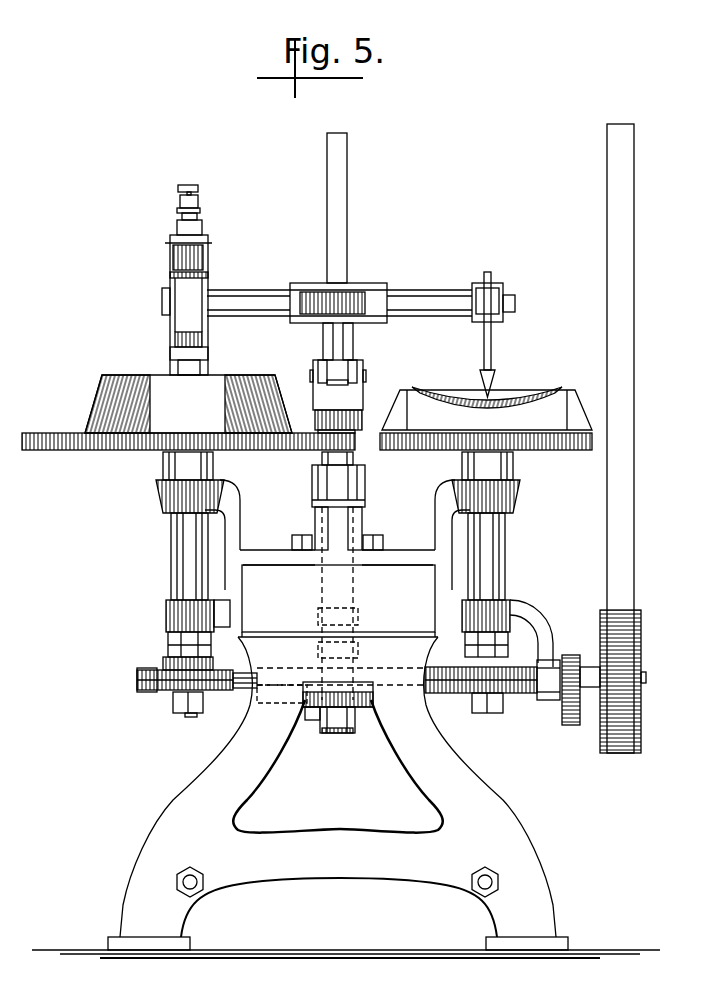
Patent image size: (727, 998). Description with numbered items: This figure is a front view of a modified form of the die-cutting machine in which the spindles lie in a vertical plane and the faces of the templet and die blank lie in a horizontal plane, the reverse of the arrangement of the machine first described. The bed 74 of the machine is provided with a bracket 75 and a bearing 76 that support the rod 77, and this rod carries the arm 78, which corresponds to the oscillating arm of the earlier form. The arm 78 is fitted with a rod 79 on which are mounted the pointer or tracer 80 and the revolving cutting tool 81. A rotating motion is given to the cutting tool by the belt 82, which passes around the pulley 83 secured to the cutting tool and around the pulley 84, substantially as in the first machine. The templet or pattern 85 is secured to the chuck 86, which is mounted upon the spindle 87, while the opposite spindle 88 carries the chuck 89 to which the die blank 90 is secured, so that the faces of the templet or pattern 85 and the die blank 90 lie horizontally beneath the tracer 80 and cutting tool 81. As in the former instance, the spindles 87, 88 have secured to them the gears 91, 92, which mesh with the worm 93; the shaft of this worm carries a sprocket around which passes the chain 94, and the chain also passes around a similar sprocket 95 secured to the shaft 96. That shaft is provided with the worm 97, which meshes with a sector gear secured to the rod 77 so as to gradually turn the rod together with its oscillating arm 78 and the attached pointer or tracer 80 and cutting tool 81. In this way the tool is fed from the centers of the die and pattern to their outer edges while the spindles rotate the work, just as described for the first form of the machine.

The bed 74 is at (337, 591).
The bracket 75 is at (342, 576).
The bearing 76 is at (334, 735).
The rod 77 is at (349, 733).
The arm 78 is at (353, 345).
The rod 79 is at (445, 292).
The pointer or tracer 80 is at (491, 362).
The revolving cutting tool 81 is at (172, 350).
The belt 82 is at (203, 258).
The pulley 83 is at (170, 244).
The pulley 84 is at (170, 277).
The templet or pattern 85 is at (530, 392).
The chuck 86 is at (575, 451).
The spindle 87 is at (502, 573).
The spindle 88 is at (172, 560).
The chuck 89 is at (116, 450).
The die blank 90 is at (188, 404).
The gear 91 is at (517, 700).
The gear 92 is at (162, 693).
The worm 93 is at (246, 691).
The chain 94 is at (550, 702).
The sprocket 95 is at (571, 727).
The shaft 96 is at (596, 666).
The worm 97 is at (311, 722).